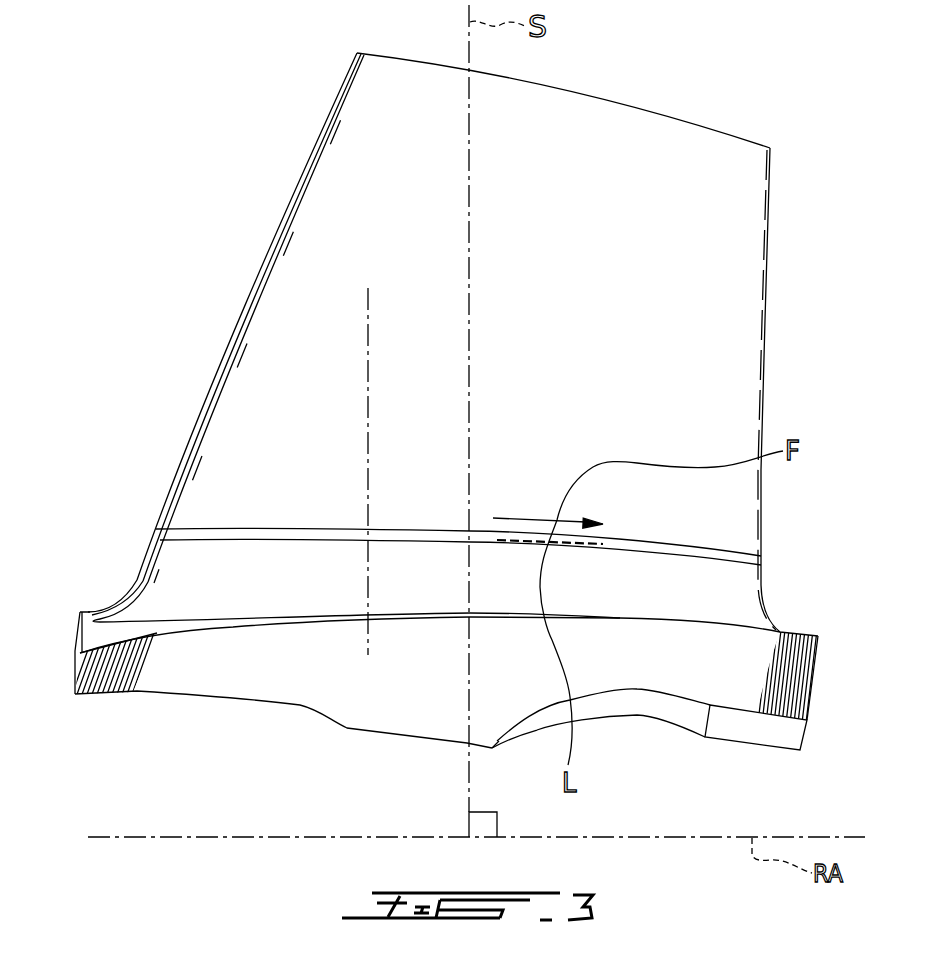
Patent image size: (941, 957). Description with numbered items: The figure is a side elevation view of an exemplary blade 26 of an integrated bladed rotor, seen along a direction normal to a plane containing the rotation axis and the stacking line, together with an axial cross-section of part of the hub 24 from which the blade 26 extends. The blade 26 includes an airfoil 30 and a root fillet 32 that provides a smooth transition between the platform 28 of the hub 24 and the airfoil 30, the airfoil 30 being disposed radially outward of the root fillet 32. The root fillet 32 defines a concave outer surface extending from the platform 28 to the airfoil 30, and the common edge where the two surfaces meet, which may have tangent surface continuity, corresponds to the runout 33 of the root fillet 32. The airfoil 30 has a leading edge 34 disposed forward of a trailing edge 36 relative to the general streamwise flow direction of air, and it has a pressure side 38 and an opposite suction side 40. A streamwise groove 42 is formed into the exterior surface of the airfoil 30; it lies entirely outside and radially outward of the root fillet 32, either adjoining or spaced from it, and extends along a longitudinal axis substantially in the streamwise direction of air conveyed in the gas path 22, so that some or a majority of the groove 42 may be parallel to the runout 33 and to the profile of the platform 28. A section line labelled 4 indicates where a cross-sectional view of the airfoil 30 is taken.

The section line 4- 4 is at (356, 473).
The gas path 22 is at (173, 312).
The hub 24 is at (780, 678).
The blade 26 is at (179, 174).
The platform 28 is at (451, 621).
The airfoil 30 is at (237, 420).
The root fillet 32 is at (158, 595).
The runout 33 is at (761, 566).
The leading edge 34 is at (220, 352).
The trailing edge 36 is at (770, 320).
The pressure side 38 is at (427, 217).
The suction side 40 is at (635, 105).
The streamwise groove 42 is at (190, 537).